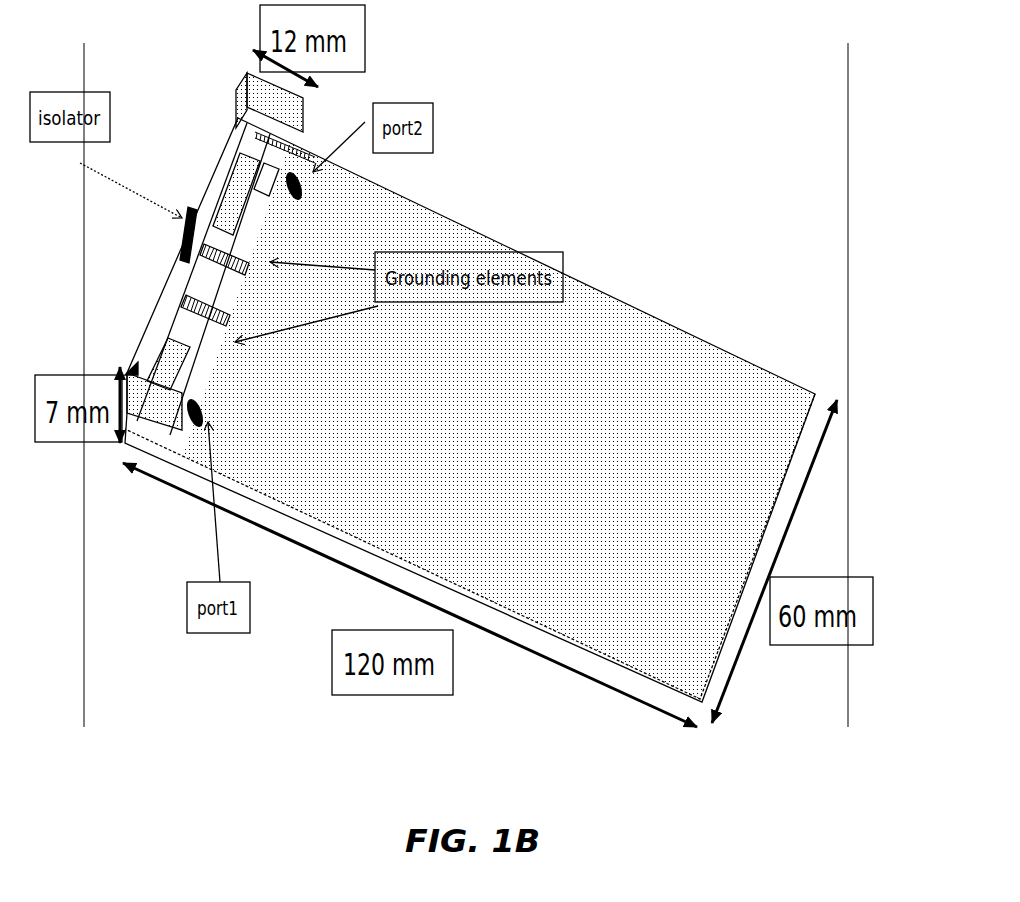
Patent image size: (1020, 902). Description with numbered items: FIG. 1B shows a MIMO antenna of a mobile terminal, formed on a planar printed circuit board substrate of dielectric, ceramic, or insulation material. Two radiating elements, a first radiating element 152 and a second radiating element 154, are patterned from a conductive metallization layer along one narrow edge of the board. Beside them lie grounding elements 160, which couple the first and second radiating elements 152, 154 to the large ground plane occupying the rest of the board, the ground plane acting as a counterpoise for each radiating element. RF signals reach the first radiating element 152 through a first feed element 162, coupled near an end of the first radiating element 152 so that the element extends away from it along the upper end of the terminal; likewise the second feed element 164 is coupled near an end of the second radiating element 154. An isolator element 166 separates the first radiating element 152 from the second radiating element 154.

The first radiating element 152 is at (172, 352).
The second radiating element 154 is at (245, 180).
The grounding elements 160 is at (224, 287).
The first feed element 162 is at (203, 404).
The second feed element 164 is at (292, 196).
The isolator element 166 is at (191, 210).